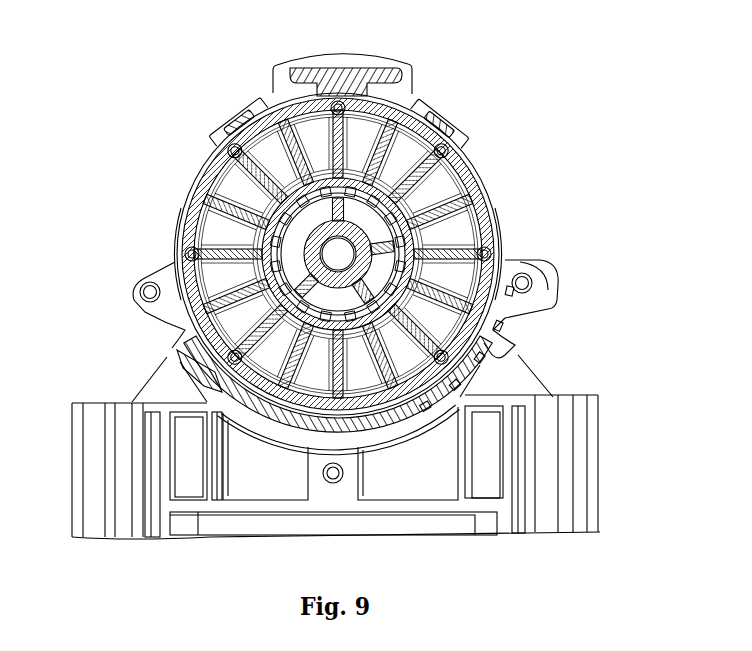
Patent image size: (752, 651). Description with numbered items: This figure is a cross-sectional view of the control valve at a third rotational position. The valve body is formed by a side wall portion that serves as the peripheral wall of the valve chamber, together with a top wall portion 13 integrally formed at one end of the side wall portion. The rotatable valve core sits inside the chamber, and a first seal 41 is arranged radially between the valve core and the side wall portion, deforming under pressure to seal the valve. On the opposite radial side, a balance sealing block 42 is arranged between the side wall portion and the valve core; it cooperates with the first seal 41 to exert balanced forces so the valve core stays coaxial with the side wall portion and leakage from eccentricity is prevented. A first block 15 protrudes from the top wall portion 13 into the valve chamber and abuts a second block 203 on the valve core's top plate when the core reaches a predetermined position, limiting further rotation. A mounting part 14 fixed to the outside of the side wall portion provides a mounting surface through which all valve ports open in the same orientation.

The balance sealing block 42 is at (337, 68).
The top wall portion 13 is at (482, 219).
The first block 15 is at (507, 262).
The first seal 41 is at (175, 356).
The second block 203 is at (502, 347).
The mounting part 14 is at (519, 484).